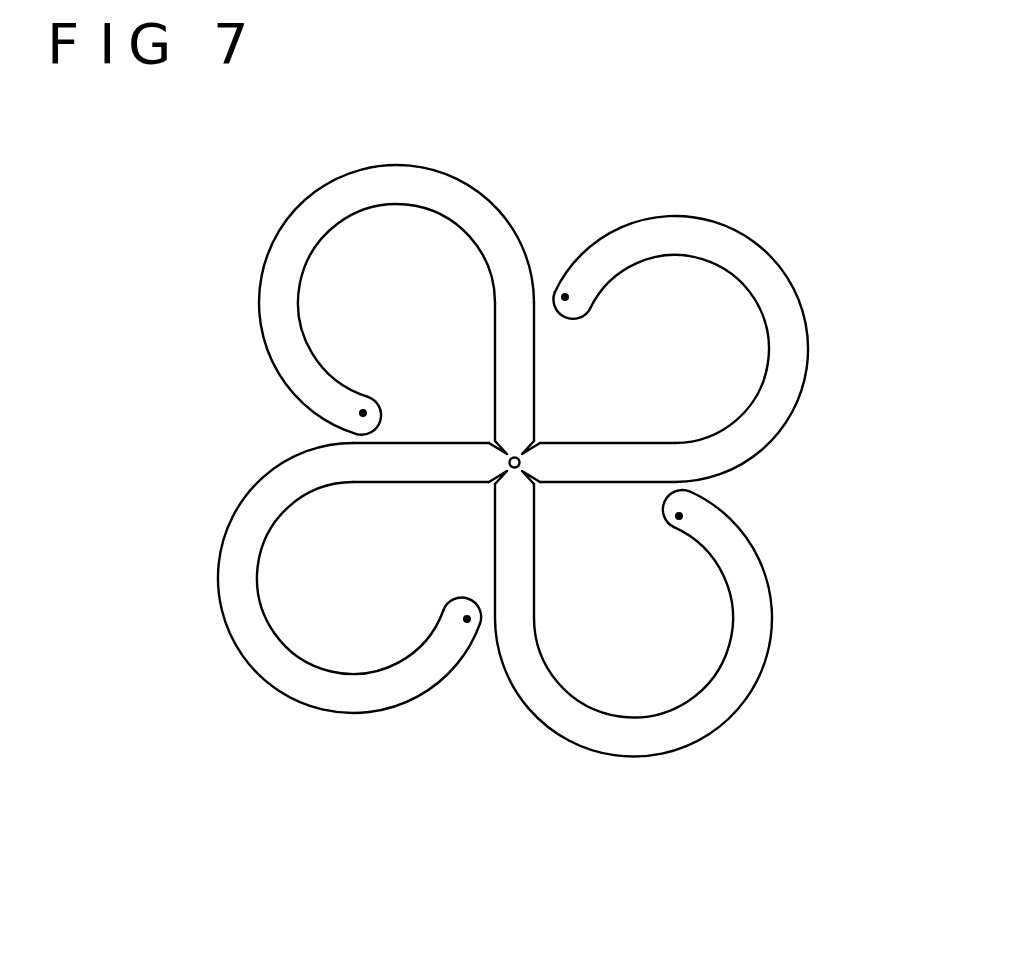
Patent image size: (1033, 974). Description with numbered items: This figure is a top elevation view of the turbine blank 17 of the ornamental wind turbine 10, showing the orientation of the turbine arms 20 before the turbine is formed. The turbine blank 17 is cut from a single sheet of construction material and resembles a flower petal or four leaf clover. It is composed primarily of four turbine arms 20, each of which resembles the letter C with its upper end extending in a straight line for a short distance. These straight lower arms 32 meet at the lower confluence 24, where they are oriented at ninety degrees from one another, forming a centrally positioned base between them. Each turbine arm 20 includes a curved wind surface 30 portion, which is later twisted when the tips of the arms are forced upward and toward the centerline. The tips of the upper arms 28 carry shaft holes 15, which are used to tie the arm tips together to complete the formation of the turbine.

The ornamental wind turbine 10 is at (212, 247).
The shaft holes 15 is at (565, 297).
The turbine blank 17 is at (204, 463).
The turbine arms 20 is at (400, 149).
The lower confluence 24 is at (488, 493).
The upper arms 28 is at (617, 232).
The wind surface 30 is at (305, 213).
The lower arms 32 is at (513, 408).